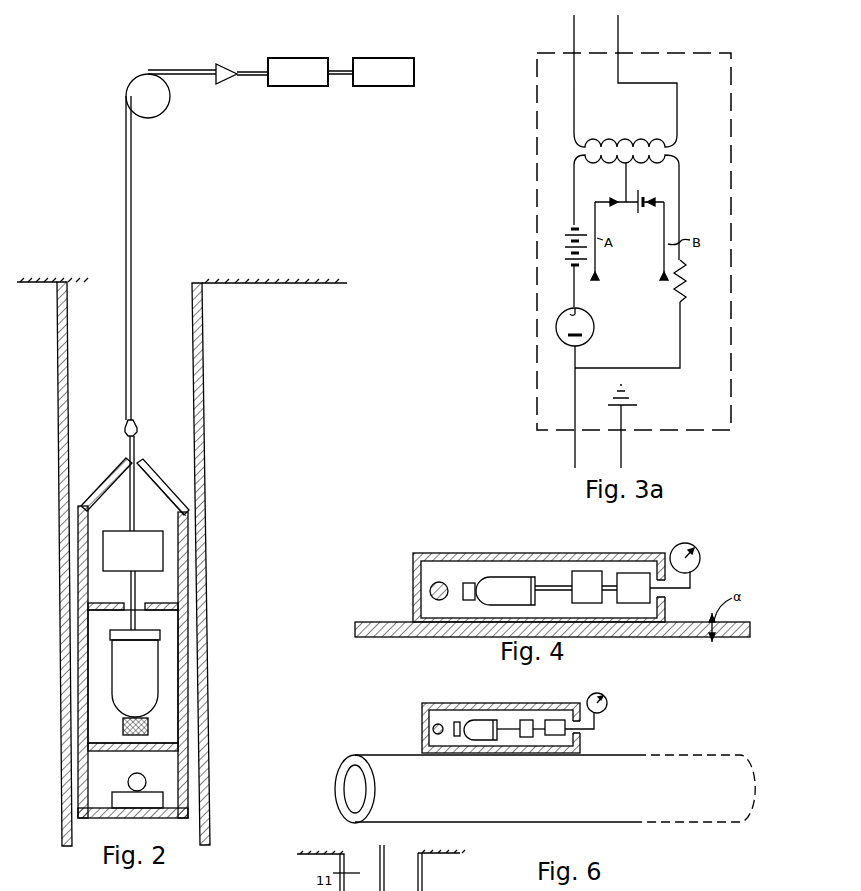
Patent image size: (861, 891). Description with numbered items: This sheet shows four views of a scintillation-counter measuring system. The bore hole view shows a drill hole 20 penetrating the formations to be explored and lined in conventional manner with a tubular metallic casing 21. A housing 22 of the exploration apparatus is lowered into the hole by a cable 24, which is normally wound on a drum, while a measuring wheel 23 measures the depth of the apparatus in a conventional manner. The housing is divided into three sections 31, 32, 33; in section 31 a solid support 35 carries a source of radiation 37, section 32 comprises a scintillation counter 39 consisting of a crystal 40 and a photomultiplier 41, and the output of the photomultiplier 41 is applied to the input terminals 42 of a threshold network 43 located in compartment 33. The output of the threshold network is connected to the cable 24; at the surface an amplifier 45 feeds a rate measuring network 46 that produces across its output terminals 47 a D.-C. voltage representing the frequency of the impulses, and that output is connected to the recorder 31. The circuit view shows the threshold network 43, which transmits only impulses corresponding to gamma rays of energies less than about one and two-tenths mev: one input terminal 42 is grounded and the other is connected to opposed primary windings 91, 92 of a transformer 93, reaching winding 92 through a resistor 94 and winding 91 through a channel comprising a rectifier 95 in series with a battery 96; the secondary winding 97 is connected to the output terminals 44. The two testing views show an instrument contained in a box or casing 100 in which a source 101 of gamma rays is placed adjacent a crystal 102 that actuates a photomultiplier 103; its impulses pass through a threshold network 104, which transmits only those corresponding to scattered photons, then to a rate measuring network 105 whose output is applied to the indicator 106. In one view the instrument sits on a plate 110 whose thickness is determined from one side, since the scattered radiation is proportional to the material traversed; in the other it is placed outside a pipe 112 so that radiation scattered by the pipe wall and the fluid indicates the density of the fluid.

In FIG. 2, the drill hole 20 is at (182, 382).
In FIG. 2, the tubular metallic casing 21 is at (200, 323).
In FIG. 2, the housing 22 is at (170, 498).
In FIG. 2, the measuring wheel 23 is at (139, 82).
In FIG. 2, the cable 24 is at (132, 275).
In FIG. 2, the recorder / housing section 31 is at (393, 77).
In FIG. 2, the housing section 32 is at (100, 621).
In FIG. 2, the housing section (compartment) 33 is at (107, 497).
In FIG. 2, the solid support 35 is at (157, 800).
In FIG. 2, the source of radiation 37 is at (146, 780).
In FIG. 2, the scintillation counter 39 is at (110, 718).
In FIG. 2, the crystal 40 is at (148, 726).
In FIG. 2, the photomultiplier 41 is at (152, 673).
In FIG. 2, the input terminals 42 is at (138, 598).
In FIG. 3A, the input terminals 42 is at (598, 455).
In FIG. 2, the threshold network 43 is at (120, 555).
In FIG. 3A, the threshold network 43 is at (546, 372).
In FIG. 2, the output terminals 44 is at (135, 521).
In FIG. 3A, the output terminals 44 is at (598, 41).
In FIG. 2, the amplifier 45 is at (226, 66).
In FIG. 2, the rate measuring network 46 is at (290, 60).
In FIG. 2, the output terminals 47 is at (340, 69).
In FIG. 3A, the primary winding 91 is at (597, 163).
In FIG. 3A, the primary winding 92 is at (658, 170).
In FIG. 3A, the transformer 93 is at (637, 152).
In FIG. 3A, the resistor 94 is at (685, 286).
In FIG. 3A, the rectifier 95 is at (560, 330).
In FIG. 3A, the battery 96 is at (570, 252).
In FIG. 3A, the secondary winding 97 is at (642, 128).
In FIG. 4, the box or casing 100 is at (415, 585).
In FIG. 6, the box or casing 100 is at (493, 704).
In FIG. 4, the source of gamma rays 101 is at (432, 581).
In FIG. 6, the source of gamma rays 101 is at (432, 727).
In FIG. 4, the crystal 102 is at (465, 581).
In FIG. 6, the crystal 102 is at (456, 722).
In FIG. 4, the photomultiplier 103 is at (502, 579).
In FIG. 6, the photomultiplier 103 is at (473, 720).
In FIG. 4, the threshold network 104 is at (622, 541).
In FIG. 6, the threshold network 104 is at (531, 720).
In FIG. 4, the rate measuring network 105 is at (631, 598).
In FIG. 6, the rate measuring network 105 is at (561, 720).
In FIG. 4, the indicator 106 is at (696, 550).
In FIG. 6, the indicator 106 is at (608, 702).
In FIG. 4, the plate 110 is at (432, 630).
In FIG. 6, the pipe 112 is at (725, 804).